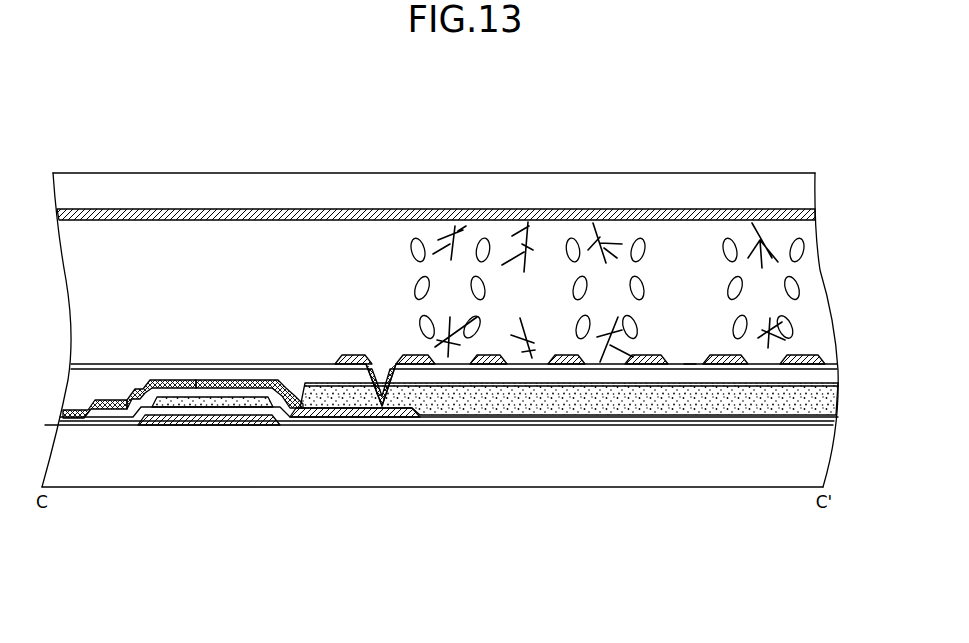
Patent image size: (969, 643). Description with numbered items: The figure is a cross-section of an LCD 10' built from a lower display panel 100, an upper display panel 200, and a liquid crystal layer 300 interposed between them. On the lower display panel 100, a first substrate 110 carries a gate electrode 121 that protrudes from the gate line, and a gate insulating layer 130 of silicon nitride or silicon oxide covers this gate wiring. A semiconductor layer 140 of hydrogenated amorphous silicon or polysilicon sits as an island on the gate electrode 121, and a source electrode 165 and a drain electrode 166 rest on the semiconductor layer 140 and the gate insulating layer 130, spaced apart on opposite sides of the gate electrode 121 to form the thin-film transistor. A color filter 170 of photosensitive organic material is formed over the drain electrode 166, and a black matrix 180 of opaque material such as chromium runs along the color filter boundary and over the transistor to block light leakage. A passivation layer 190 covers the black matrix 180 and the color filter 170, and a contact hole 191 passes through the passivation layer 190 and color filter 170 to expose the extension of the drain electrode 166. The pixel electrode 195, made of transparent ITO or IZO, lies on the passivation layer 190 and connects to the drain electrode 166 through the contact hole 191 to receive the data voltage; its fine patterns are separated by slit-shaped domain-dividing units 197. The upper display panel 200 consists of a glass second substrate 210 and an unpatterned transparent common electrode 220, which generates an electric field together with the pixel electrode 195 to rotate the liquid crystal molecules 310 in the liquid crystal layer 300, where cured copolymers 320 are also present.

The LCD 10' is at (440, 386).
The lower display panel 100 is at (469, 426).
The first substrate 110 is at (358, 455).
The gate electrode 121 is at (200, 418).
The gate insulating layer 130 is at (307, 420).
The semiconductor layer 140 is at (173, 400).
The source electrode 165 is at (140, 406).
The drain electrode 166 is at (237, 389).
The color filter 170 is at (631, 404).
The black matrix 180 is at (110, 410).
The passivation layer 190 is at (500, 370).
The contact hole 191 is at (384, 352).
The pixel electrode 195 is at (567, 358).
The domain-dividing units 197 is at (694, 358).
The upper display panel 200 is at (473, 165).
The second substrate 210 is at (143, 190).
The common electrode 220 is at (218, 208).
The liquid crystal layer 300 is at (652, 252).
The liquid crystal molecules 310 is at (636, 238).
The copolymers 320 is at (753, 221).